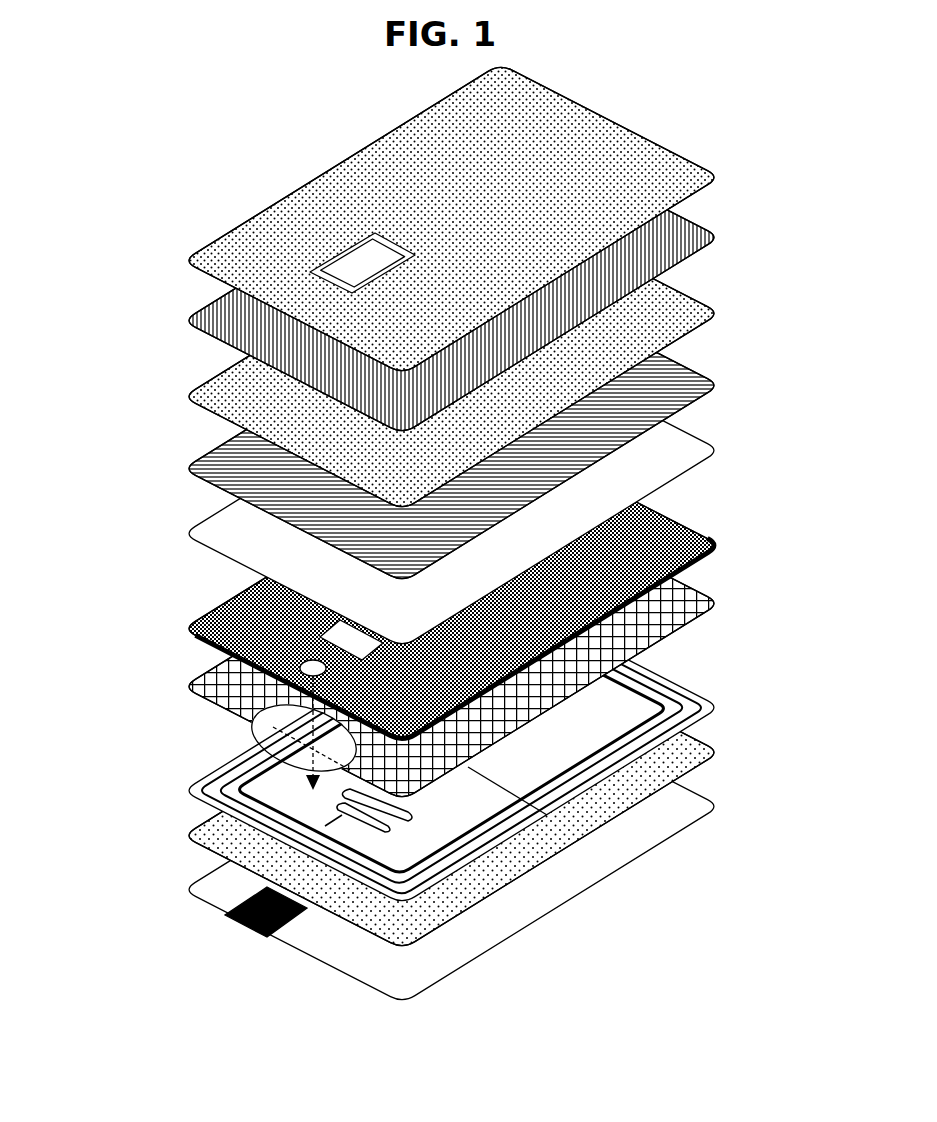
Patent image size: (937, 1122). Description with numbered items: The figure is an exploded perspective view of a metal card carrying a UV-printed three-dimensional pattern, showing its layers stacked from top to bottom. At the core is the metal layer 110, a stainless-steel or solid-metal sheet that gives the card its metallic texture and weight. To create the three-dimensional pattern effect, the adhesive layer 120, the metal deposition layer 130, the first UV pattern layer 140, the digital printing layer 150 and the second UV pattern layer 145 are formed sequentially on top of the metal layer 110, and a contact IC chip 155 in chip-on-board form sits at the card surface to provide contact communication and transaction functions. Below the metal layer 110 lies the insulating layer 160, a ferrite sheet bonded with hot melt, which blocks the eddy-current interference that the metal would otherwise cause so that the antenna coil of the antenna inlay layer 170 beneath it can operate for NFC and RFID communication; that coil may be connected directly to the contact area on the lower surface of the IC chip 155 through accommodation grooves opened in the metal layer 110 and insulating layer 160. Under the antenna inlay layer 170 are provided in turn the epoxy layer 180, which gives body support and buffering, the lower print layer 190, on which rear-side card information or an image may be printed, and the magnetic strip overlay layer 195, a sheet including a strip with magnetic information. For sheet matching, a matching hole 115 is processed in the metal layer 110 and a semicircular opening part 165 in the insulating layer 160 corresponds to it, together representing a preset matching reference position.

The metal layer 110 is at (723, 545).
The matching hole 115 is at (300, 671).
The adhesive layer 120 is at (723, 450).
The metal deposition layer 130 is at (723, 385).
The first UV pattern layer 140 is at (723, 313).
The second UV pattern layer 145 is at (723, 177).
The digital printing layer 150 is at (723, 237).
The contact IC chip 155 is at (325, 259).
The insulating layer 160 is at (723, 603).
The semicircular opening part 165 is at (258, 731).
The antenna inlay layer 170 is at (723, 707).
The epoxy layer 180 is at (723, 752).
The lower print layer 190 is at (723, 806).
The magnetic strip overlay layer 195 is at (245, 927).